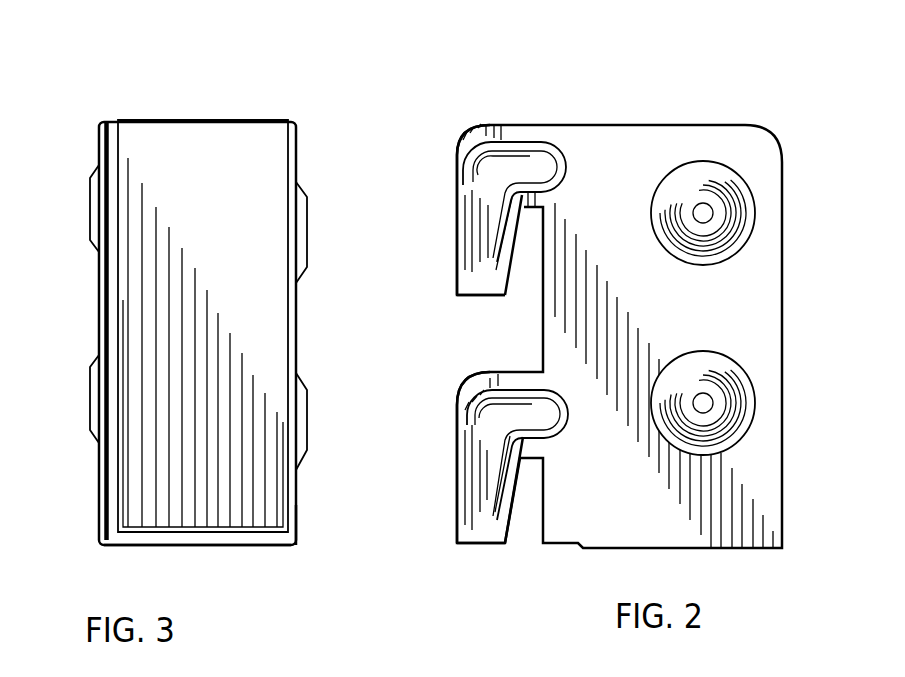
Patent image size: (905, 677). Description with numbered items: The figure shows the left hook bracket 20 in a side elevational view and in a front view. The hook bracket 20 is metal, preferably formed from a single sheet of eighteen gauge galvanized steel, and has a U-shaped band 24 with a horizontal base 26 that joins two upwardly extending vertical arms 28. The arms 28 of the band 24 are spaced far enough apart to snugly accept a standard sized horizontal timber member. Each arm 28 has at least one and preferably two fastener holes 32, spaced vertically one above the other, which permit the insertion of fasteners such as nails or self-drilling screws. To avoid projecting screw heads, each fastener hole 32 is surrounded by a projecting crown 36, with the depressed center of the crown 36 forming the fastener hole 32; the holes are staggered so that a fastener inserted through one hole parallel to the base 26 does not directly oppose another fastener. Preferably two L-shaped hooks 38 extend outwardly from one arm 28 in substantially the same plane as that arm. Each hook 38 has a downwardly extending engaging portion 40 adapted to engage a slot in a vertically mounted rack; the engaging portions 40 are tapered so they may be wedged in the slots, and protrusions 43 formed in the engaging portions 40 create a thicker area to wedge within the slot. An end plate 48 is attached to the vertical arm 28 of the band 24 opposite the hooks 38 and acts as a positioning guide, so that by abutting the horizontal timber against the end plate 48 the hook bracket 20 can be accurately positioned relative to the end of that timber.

In FIG. 3, the left hook bracket 20 is at (73, 480).
In FIG. 2, the left hook bracket 20 is at (679, 93).
In FIG. 3, the U-shaped band 24 is at (297, 518).
In FIG. 3, the horizontal base 26 is at (217, 547).
In FIG. 3, the vertical arm 28 is at (97, 310).
In FIG. 2, the vertical arm 28 is at (782, 275).
In FIG. 2, the fastener hole 32 is at (712, 211).
In FIG. 3, the projecting crown 36 is at (92, 180).
In FIG. 2, the projecting crown 36 is at (735, 172).
In FIG. 2, the L-shaped hook 38 is at (456, 192).
In FIG. 2, the engaging portion 40 is at (455, 260).
In FIG. 2, the protrusion 43 is at (531, 142).
In FIG. 3, the end plate 48 is at (198, 120).